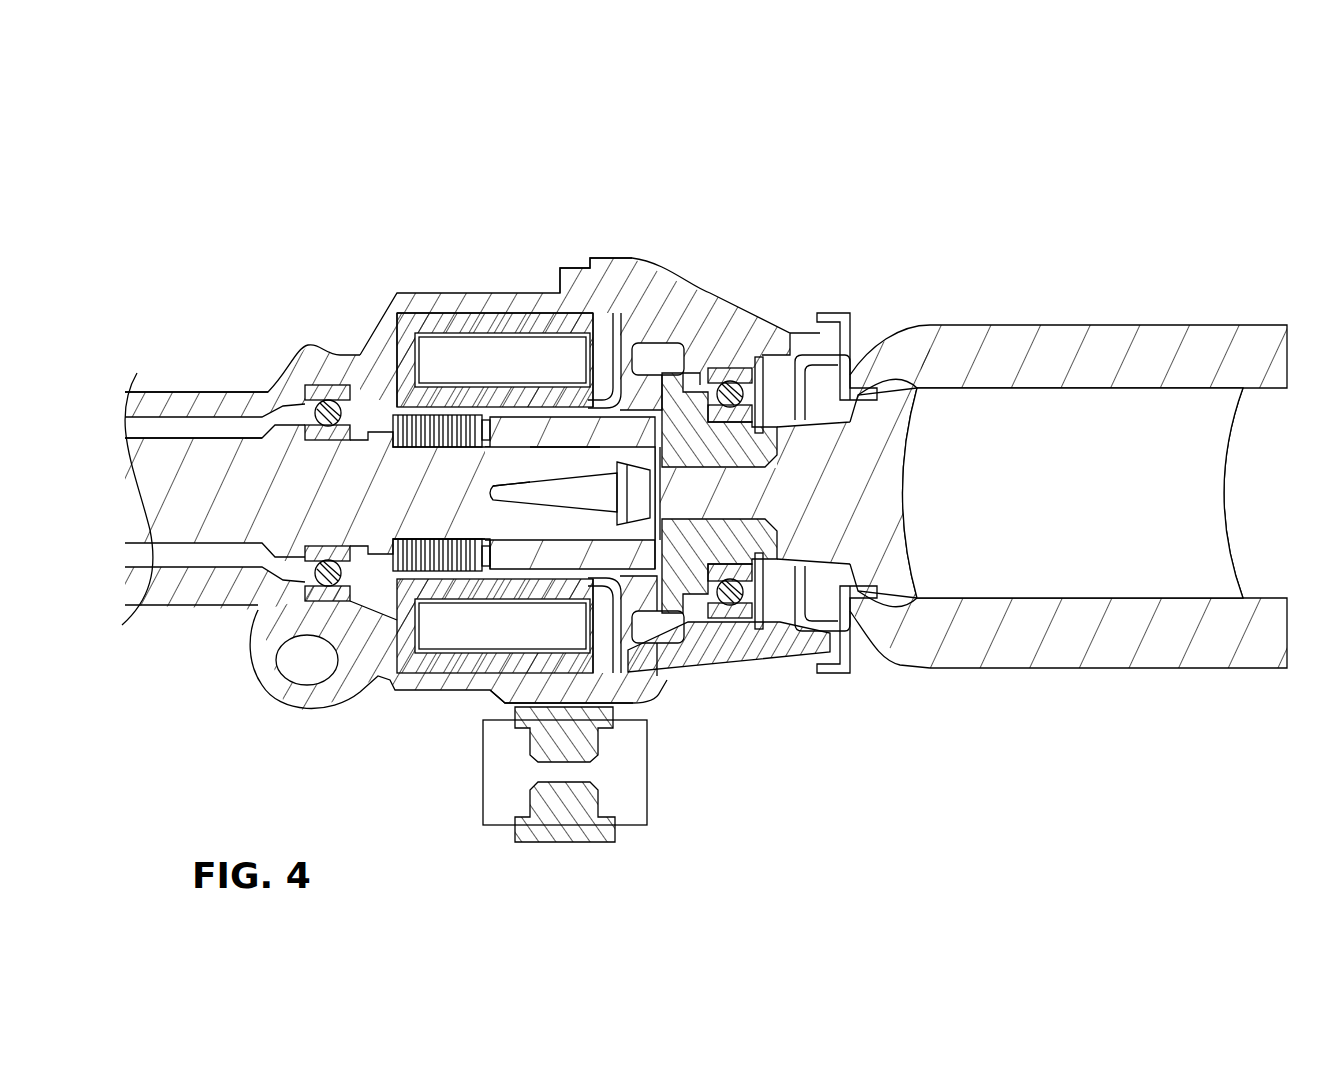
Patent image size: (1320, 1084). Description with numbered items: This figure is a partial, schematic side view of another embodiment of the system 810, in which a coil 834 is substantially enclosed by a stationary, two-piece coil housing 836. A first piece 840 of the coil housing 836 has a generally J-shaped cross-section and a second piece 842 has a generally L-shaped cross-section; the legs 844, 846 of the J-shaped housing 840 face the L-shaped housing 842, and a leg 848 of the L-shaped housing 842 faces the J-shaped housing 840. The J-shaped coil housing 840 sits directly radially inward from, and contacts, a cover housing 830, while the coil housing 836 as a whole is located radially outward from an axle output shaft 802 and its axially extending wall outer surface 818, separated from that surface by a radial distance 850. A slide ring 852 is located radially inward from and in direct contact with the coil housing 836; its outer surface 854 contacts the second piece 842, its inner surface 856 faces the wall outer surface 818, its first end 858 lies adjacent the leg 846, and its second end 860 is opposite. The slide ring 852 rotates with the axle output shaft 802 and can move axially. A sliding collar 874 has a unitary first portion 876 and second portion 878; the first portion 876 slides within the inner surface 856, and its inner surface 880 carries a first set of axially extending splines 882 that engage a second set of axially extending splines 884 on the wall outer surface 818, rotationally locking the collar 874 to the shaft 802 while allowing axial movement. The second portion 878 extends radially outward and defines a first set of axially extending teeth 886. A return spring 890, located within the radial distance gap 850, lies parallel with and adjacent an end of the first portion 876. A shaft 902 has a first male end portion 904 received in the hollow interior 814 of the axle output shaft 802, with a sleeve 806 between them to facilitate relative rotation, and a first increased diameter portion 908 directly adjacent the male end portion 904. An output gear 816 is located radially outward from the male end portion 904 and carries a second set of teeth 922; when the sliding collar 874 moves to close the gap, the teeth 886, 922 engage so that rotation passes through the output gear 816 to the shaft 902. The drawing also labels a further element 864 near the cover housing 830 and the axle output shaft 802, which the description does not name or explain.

The system 810 is at (670, 173).
The axle output shaft 802 is at (390, 493).
The sleeve 806 is at (563, 601).
The hollow interior 814 is at (522, 533).
The output gear 816 is at (687, 455).
The axially extending wall outer surface 818 is at (187, 440).
The cover housing 830 is at (207, 402).
The coil 834 is at (447, 452).
The coil housing 836 is at (502, 360).
The first piece 840 is at (540, 464).
The second piece 842 is at (606, 395).
The leg 844 is at (437, 327).
The leg 846 is at (410, 393).
The leg 848 is at (570, 292).
The radial distance 850 is at (381, 583).
The slide ring 852 is at (497, 583).
The outer surface 854 is at (578, 452).
The inner surface 856 is at (535, 420).
The first end 858 is at (507, 400).
The second end 860 is at (630, 358).
The bearing 864 is at (317, 390).
The sliding collar 874 is at (665, 640).
The first portion 876 is at (508, 582).
The second portion 878 is at (683, 622).
The inner surface 880 is at (486, 455).
The first set of axially extending splines 882 is at (552, 472).
The second set of axially extending splines 884 is at (502, 538).
The first set of axially extending teeth 886 is at (688, 380).
The return spring 890 is at (378, 425).
The shaft 902 is at (1057, 504).
The first male end portion 904 is at (788, 408).
The first increased diameter portion 908 is at (910, 362).
The second set of teeth 922 is at (716, 370).